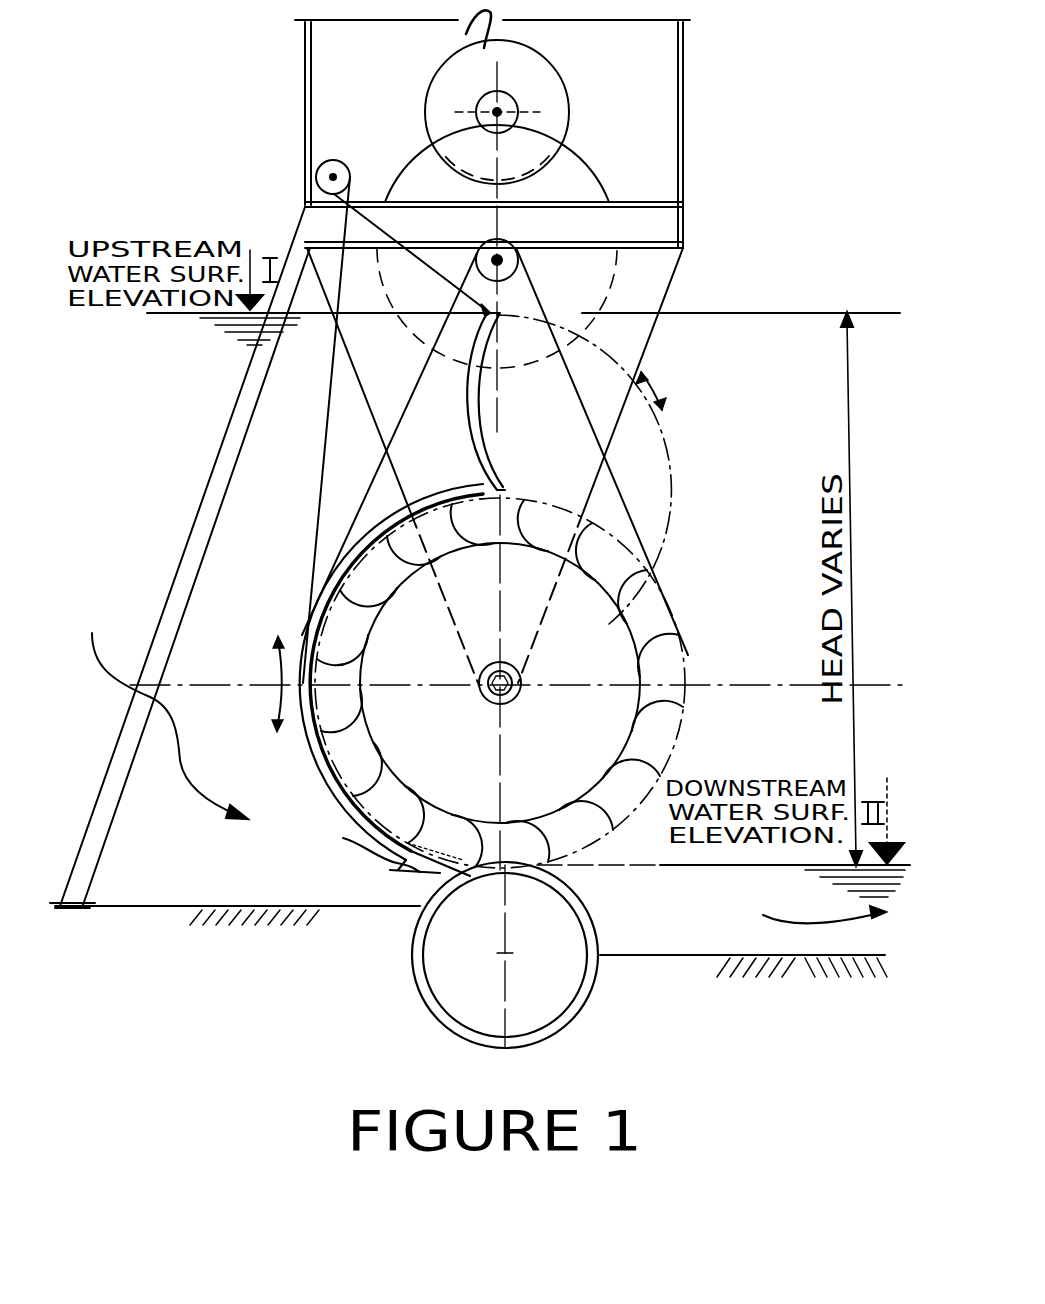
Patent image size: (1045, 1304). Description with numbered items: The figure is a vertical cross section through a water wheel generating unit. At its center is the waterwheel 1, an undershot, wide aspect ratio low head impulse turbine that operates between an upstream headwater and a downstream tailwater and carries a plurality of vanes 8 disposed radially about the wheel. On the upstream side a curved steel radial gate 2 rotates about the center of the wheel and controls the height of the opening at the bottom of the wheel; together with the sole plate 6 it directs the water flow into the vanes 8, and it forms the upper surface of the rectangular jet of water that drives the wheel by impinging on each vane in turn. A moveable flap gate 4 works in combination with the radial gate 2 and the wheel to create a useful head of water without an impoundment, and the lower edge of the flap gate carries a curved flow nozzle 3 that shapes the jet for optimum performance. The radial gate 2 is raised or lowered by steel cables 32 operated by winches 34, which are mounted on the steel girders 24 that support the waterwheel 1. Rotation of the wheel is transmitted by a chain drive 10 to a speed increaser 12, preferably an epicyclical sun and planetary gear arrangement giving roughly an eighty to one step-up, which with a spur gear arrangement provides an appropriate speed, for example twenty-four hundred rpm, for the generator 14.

The waterwheel 1 is at (677, 607).
The radial gate 2 is at (332, 573).
The curved flow nozzle 3 is at (417, 860).
The moveable flap gate 4 is at (462, 433).
The sole plate 6 is at (435, 898).
The vanes 8 is at (676, 741).
The chain drive 10 is at (627, 500).
The speed increaser 12 is at (590, 172).
The generator 14 is at (563, 90).
The steel girders 24 is at (683, 230).
The steel cables 32 is at (438, 288).
The winches 34 is at (331, 158).